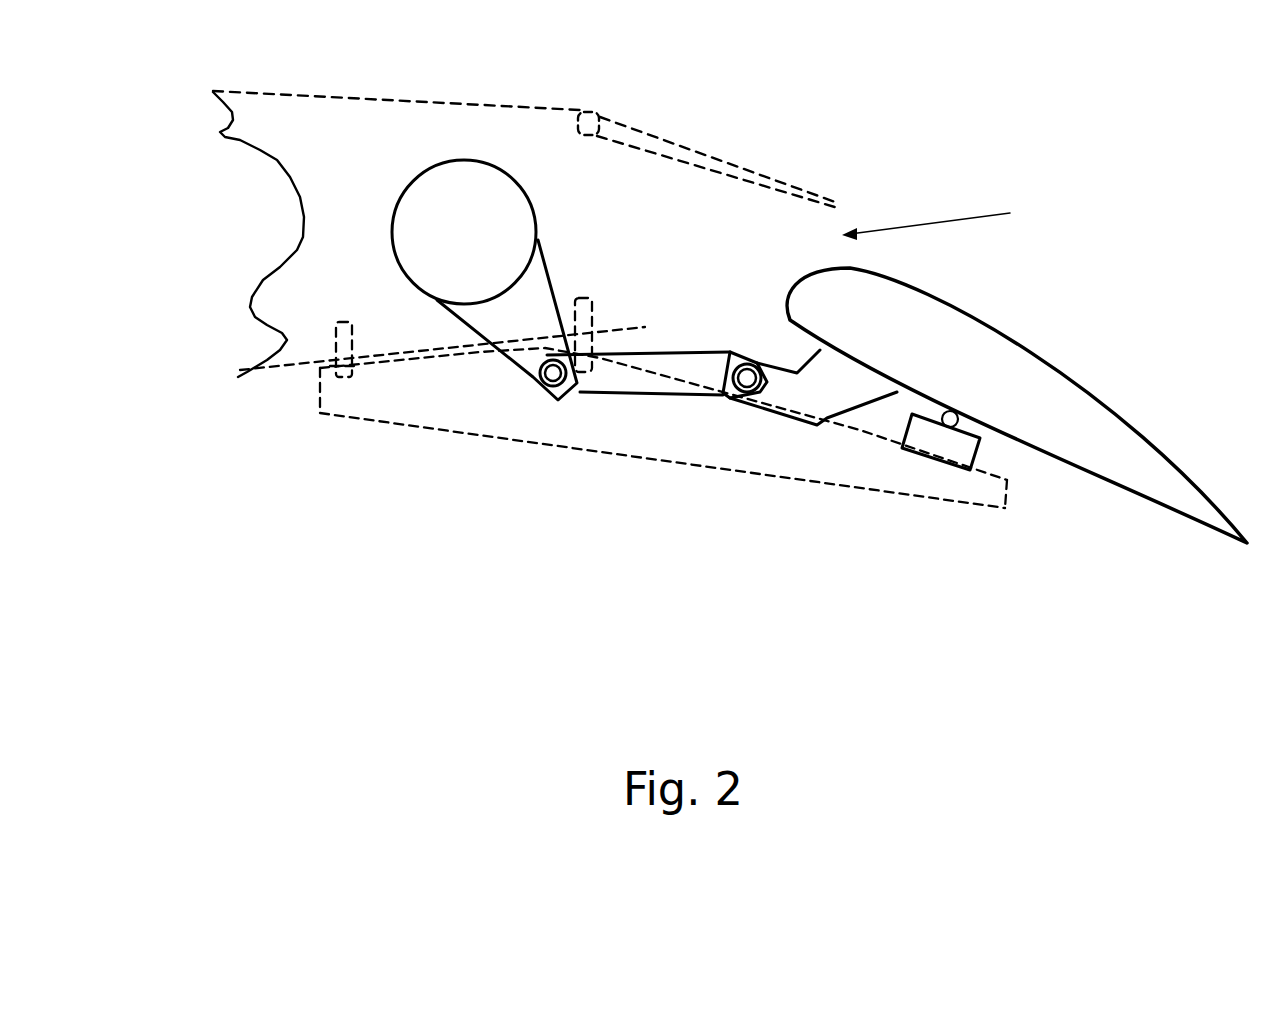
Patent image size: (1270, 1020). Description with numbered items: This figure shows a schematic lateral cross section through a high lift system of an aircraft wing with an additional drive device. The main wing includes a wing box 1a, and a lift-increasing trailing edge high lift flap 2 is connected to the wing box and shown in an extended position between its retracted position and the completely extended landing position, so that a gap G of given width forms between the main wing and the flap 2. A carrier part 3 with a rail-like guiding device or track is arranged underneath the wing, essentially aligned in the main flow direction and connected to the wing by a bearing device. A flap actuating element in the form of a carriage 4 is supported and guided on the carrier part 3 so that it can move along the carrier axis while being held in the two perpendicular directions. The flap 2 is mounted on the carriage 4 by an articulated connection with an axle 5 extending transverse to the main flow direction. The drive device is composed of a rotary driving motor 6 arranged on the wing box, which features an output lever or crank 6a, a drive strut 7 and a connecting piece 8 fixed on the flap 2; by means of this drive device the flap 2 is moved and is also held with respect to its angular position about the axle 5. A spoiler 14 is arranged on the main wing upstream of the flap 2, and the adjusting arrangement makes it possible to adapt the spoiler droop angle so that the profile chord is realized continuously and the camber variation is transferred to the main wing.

The wing box 1a is at (338, 255).
The spoiler 14 is at (693, 157).
The gap G is at (940, 220).
The rotary driving motor 6 is at (463, 253).
The crank 6a is at (508, 323).
The carrier part 3 is at (628, 421).
The drive strut 7 is at (612, 377).
The connecting piece 8 is at (818, 390).
The high lift flap 2 is at (1100, 452).
The axle 5 is at (950, 422).
The carriage 4 is at (960, 448).